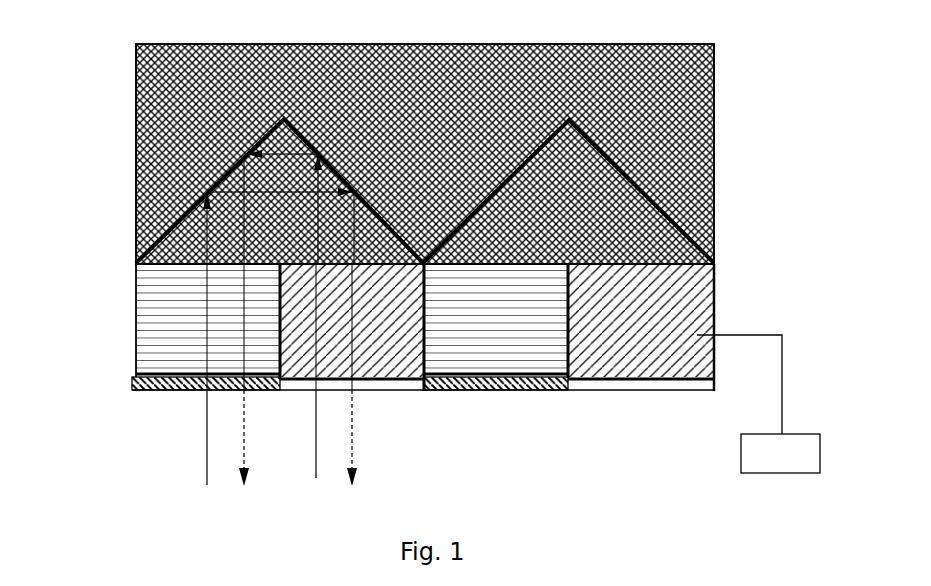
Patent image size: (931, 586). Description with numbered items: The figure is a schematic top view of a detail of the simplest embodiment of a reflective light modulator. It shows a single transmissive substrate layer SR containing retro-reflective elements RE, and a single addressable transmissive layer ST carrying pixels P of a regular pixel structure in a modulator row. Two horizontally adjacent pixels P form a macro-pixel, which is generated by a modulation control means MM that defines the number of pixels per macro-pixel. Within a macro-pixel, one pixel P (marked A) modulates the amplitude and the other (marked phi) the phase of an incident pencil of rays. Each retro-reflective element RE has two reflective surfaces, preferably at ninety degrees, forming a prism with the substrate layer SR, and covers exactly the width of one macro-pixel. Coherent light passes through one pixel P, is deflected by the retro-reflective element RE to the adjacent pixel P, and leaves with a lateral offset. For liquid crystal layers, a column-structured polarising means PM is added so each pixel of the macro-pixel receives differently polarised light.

The transmissive substrate layer SR is at (170, 97).
The retro-reflective element RE is at (180, 203).
The addressable transmissive layer ST is at (170, 311).
The polarising means PM is at (132, 381).
The pixel P is at (640, 352).
The modulation control means MM is at (758, 404).